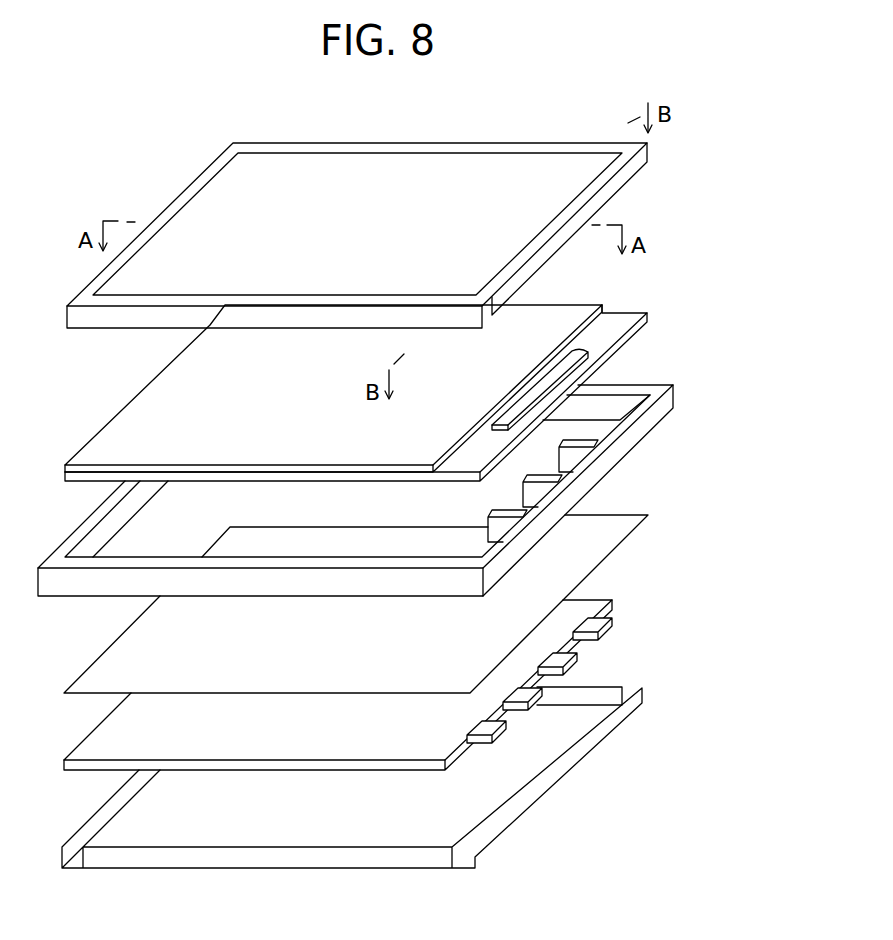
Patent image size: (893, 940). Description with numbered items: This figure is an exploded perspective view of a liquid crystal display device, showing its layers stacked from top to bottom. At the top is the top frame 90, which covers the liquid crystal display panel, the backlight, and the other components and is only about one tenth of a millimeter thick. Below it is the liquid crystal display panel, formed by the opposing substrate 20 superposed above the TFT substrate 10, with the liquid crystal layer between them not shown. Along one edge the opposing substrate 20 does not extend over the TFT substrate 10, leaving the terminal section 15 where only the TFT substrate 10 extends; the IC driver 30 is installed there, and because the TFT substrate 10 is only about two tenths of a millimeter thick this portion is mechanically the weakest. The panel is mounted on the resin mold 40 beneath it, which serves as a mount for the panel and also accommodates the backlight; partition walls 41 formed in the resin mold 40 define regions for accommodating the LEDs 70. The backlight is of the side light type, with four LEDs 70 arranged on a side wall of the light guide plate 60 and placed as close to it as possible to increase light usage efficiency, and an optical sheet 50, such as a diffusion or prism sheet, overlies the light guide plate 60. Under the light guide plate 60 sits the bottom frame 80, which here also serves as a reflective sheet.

The top frame 90 is at (475, 146).
The opposing substrate 20 is at (547, 317).
The terminal section 15 is at (647, 300).
The TFT substrate 10 is at (648, 316).
The IC driver 30 is at (590, 350).
The resin mold 40 is at (653, 417).
The partition walls 41 is at (590, 433).
The optical sheet 50 is at (587, 537).
The light guide plate 60 is at (587, 603).
The LEDs 70 is at (612, 622).
The bottom frame 80 is at (597, 742).